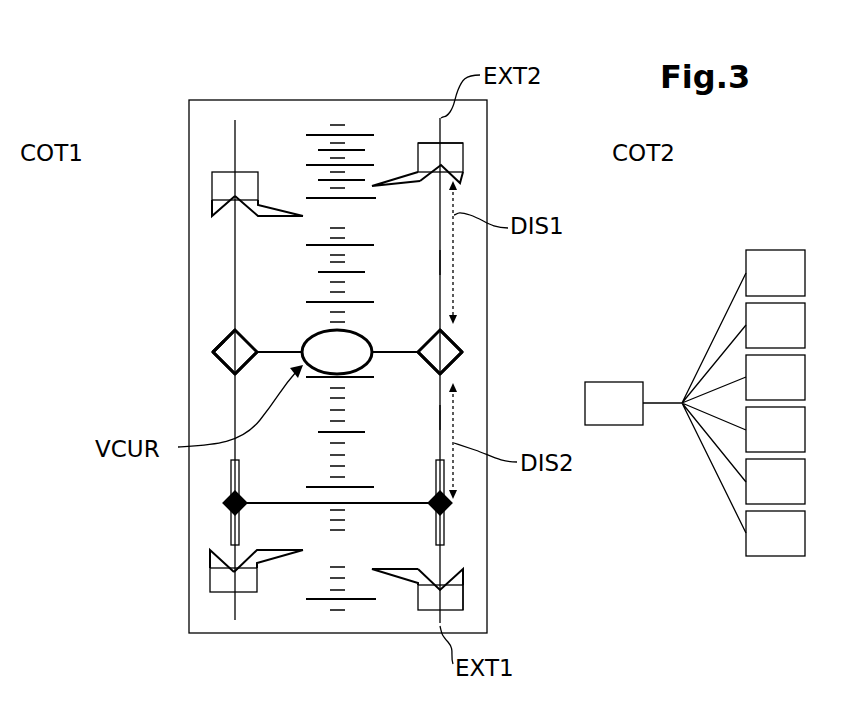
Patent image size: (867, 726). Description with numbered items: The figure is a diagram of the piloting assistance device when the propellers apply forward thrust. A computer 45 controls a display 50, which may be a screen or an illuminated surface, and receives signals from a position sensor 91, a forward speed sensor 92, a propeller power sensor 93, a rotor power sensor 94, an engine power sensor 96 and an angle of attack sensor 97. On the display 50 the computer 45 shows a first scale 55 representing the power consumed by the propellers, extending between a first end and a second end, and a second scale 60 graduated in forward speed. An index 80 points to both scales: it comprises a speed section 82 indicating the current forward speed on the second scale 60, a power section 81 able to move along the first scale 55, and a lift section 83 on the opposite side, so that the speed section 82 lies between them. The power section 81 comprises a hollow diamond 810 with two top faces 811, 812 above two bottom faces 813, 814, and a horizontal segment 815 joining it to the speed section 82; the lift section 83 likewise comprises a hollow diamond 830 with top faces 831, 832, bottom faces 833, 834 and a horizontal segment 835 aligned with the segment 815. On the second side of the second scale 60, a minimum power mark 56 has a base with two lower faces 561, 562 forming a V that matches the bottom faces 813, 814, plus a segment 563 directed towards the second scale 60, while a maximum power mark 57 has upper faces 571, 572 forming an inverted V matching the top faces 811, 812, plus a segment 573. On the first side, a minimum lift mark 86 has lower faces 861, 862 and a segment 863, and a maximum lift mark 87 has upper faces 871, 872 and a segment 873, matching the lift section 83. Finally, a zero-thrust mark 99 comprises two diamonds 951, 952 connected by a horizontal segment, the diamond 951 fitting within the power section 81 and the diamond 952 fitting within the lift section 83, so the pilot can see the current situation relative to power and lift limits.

The display 50 is at (212, 643).
The first scale 55 is at (429, 85).
The minimum power mark 56 is at (461, 608).
The maximum power mark 57 is at (468, 176).
The second scale 60 is at (325, 83).
The index 80 is at (176, 332).
The power section 81 is at (497, 337).
The speed section 82 is at (300, 377).
The lift section 83 is at (166, 332).
The minimum lift mark 86 is at (204, 608).
The maximum lift mark 87 is at (213, 144).
The zero-thrust mark 99 is at (354, 502).
The computer 45 is at (665, 403).
The position sensor 91 is at (775, 273).
The forward speed sensor 92 is at (775, 325).
The propeller power sensor 93 is at (775, 377).
The rotor power sensor 94 is at (775, 429).
The engine power sensor 96 is at (775, 481).
The angle of attack sensor 97 is at (775, 533).
The lower face 561 is at (452, 572).
The lower face 562 is at (464, 592).
The segment 563 is at (400, 583).
The upper face 571 is at (435, 185).
The upper face 572 is at (462, 182).
The segment 573 is at (443, 131).
The hollow diamond 810 is at (497, 326).
The top face 811 is at (441, 292).
The top face 812 is at (452, 342).
The bottom face 813 is at (441, 416).
The bottom face 814 is at (456, 374).
The horizontal segment 815 is at (441, 262).
The hollow diamond 830 is at (228, 336).
The top face 831 is at (223, 343).
The top face 832 is at (237, 328).
The bottom face 833 is at (226, 362).
The bottom face 834 is at (258, 372).
The horizontal segment 835 is at (285, 352).
The lower face 861 is at (226, 566).
The lower face 862 is at (238, 566).
The segment 863 is at (280, 558).
The upper face 871 is at (230, 207).
The upper face 872 is at (232, 221).
The segment 873 is at (300, 214).
The diamond 951 is at (452, 503).
The diamond 952 is at (232, 503).